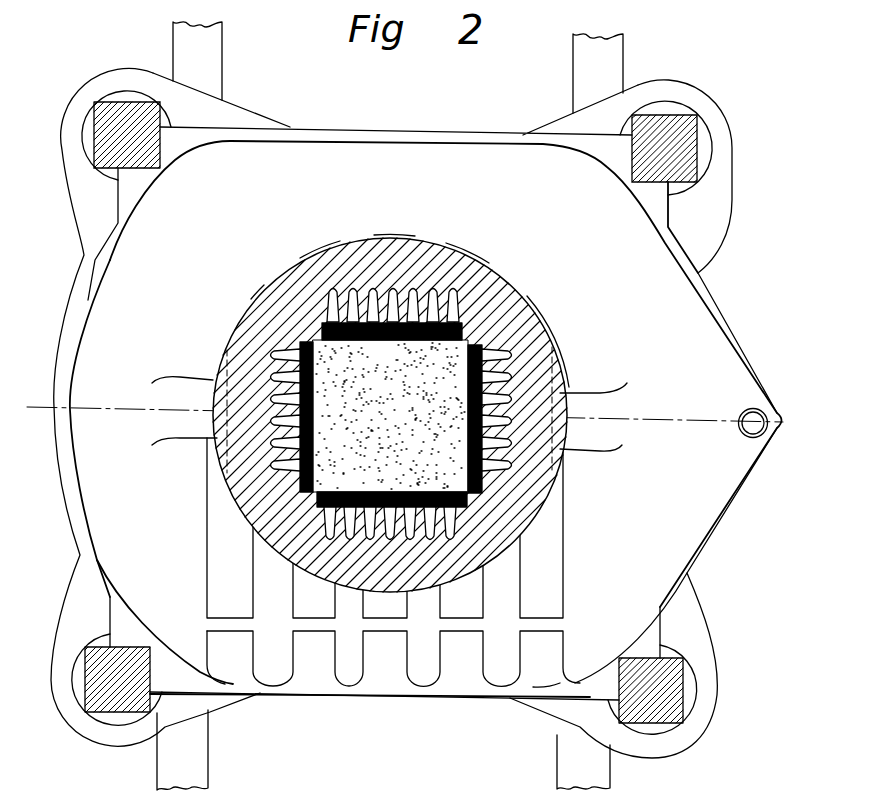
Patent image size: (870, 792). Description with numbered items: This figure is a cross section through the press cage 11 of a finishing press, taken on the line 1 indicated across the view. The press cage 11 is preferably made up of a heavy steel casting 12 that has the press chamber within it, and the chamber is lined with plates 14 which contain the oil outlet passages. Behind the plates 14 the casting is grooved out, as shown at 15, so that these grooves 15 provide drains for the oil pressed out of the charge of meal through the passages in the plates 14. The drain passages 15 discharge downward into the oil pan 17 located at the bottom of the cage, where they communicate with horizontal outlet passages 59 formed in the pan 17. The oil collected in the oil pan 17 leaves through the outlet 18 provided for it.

The section line 1— 1 is at (30, 410).
The press cage 11 is at (540, 537).
The heavy steel casting 12 is at (525, 517).
The lining plates 14 is at (414, 326).
The oil grooves 15 is at (393, 300).
The oil pan 17 is at (680, 317).
The oil outlet 18 is at (752, 414).
The horizontal outlet passages 59 is at (347, 610).